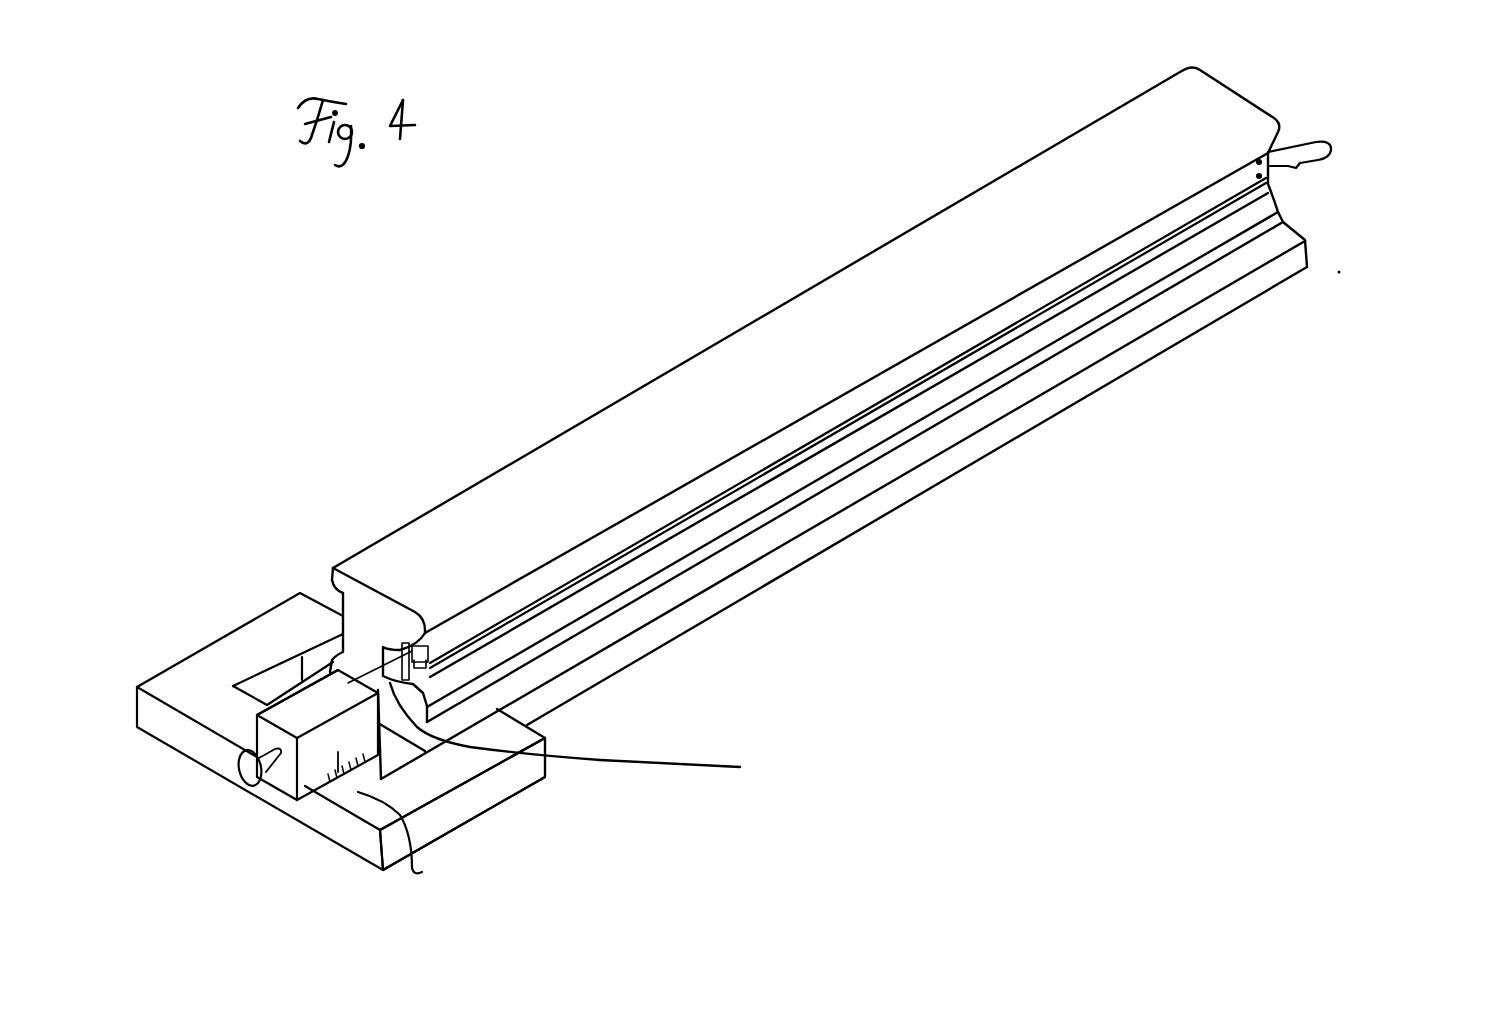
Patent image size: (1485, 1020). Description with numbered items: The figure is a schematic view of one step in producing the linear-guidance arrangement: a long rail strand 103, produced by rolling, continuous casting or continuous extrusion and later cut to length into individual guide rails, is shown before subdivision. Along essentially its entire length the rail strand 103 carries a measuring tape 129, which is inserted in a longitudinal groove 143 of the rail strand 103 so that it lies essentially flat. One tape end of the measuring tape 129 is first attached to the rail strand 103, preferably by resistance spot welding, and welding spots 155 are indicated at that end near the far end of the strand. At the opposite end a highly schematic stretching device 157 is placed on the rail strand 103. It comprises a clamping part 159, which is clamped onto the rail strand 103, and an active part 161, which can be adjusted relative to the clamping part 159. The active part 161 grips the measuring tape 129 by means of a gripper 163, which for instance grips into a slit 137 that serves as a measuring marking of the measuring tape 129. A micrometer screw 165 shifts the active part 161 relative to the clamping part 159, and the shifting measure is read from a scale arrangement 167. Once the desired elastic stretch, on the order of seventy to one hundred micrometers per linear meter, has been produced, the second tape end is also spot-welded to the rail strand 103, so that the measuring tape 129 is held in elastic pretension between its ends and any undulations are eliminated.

The rail strand 103 is at (782, 322).
The measuring tape 129 is at (1190, 215).
The slit 137 is at (428, 646).
The longitudinal groove 143 is at (382, 646).
The welding spots 155 is at (1333, 151).
The stretching device 157 is at (190, 634).
The clamping part 159 is at (493, 812).
The active part 161 is at (290, 720).
The gripper 163 is at (590, 733).
The micrometer screw 165 is at (263, 787).
The scale arrangement 167 is at (414, 839).